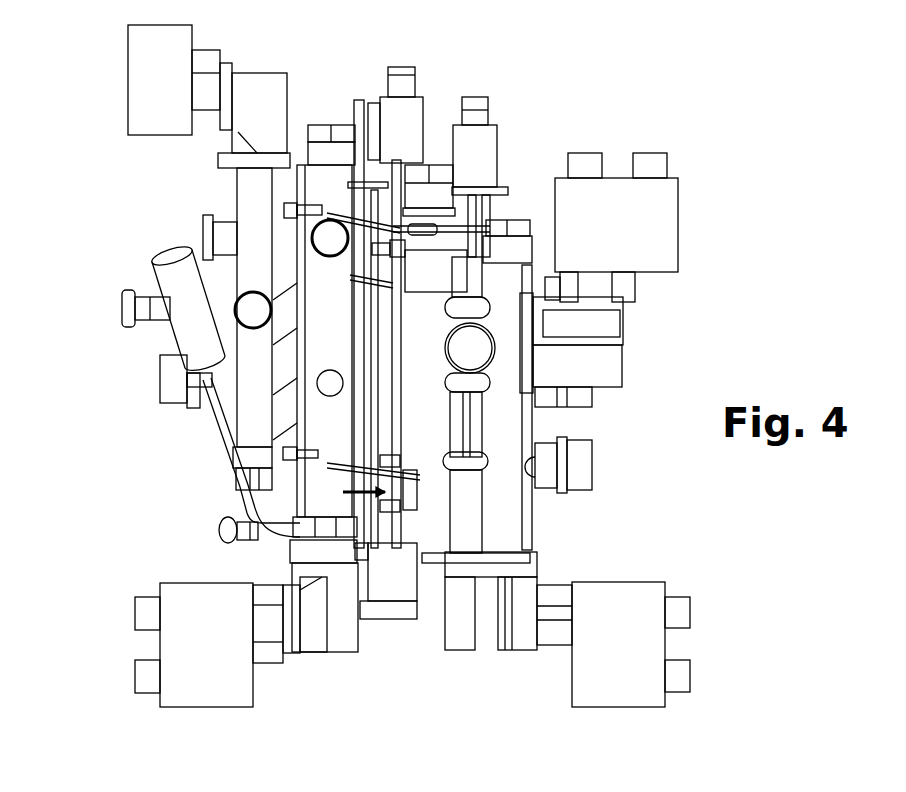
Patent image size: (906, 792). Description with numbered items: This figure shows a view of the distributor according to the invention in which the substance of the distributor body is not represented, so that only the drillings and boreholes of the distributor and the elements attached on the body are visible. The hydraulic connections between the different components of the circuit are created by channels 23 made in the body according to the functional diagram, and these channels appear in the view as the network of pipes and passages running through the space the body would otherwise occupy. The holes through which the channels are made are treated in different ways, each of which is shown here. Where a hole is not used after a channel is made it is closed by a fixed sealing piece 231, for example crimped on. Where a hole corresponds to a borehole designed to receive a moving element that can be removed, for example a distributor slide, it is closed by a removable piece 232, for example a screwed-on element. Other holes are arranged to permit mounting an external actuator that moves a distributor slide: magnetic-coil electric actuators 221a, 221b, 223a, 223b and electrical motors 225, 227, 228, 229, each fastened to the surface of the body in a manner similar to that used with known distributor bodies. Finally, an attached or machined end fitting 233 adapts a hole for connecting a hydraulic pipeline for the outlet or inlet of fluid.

The electrical motor 227 is at (143, 77).
The fixed sealing piece 231 is at (122, 305).
The end fitting 233 is at (168, 383).
The channel 23 is at (227, 423).
The magnetic-coil electric actuator 223a is at (390, 108).
The magnetic-coil electric actuator 221a is at (483, 133).
The removable piece 232 is at (513, 225).
The electrical motor 228 is at (663, 220).
The electrical motor 229 is at (200, 673).
The magnetic-coil electric actuator 223b is at (408, 585).
The magnetic-coil electric actuator 221b is at (450, 603).
The electrical motor 225 is at (627, 595).